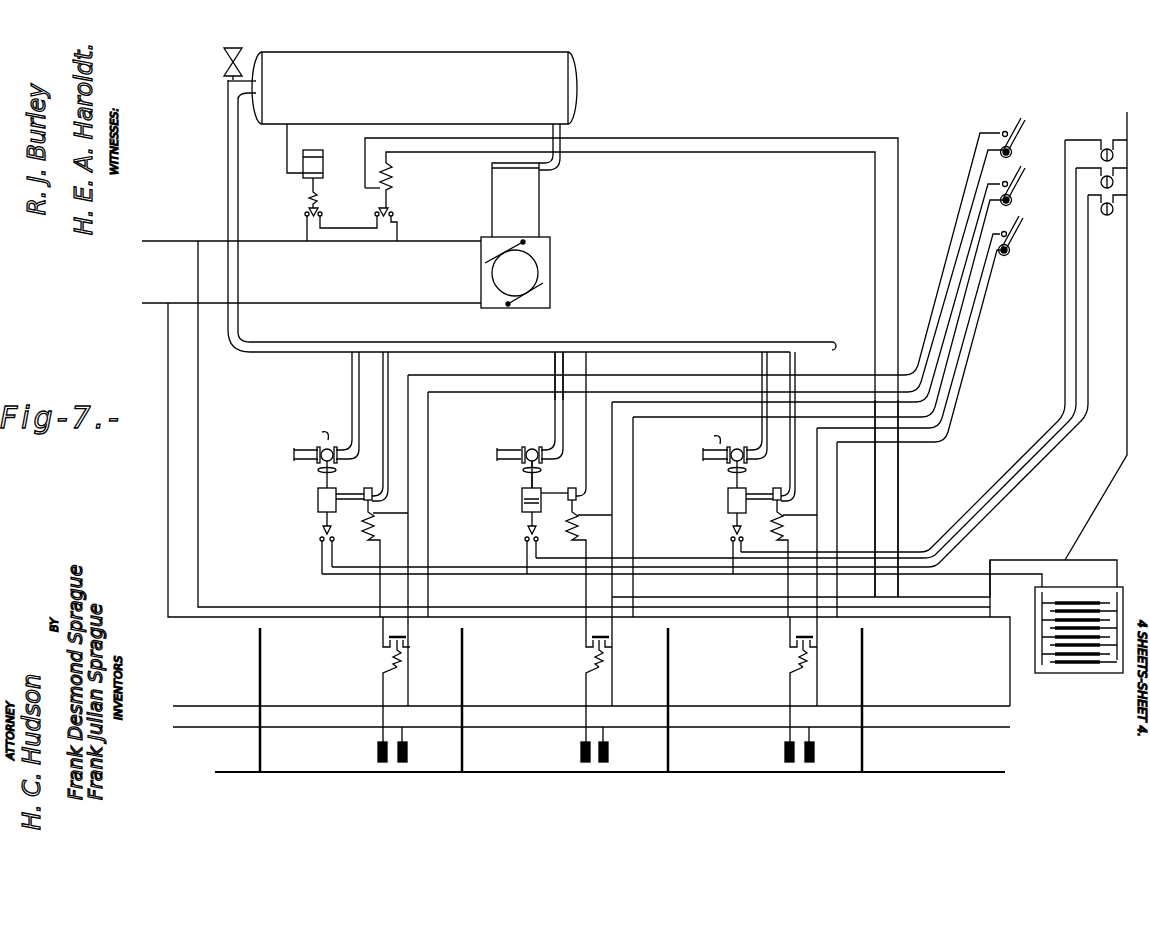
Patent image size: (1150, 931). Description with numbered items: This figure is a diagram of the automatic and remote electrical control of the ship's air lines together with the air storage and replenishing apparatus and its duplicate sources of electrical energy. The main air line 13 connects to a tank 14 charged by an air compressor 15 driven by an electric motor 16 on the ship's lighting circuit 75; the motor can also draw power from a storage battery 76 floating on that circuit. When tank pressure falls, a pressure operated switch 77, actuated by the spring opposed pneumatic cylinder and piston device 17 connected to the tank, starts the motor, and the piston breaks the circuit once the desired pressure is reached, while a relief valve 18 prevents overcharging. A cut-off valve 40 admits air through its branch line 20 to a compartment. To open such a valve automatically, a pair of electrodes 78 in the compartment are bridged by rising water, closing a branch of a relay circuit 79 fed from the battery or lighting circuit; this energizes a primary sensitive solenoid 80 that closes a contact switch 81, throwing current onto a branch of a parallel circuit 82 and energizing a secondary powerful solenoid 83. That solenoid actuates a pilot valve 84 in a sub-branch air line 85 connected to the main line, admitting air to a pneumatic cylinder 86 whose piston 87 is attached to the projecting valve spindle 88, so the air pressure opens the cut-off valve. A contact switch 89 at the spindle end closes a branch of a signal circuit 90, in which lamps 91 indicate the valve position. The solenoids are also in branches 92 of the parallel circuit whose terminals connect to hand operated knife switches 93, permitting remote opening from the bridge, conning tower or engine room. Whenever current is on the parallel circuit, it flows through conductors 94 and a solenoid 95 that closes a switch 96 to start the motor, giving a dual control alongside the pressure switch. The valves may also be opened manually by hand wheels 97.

The main air line 13 is at (228, 172).
The tank 14 is at (414, 88).
The air compressor 15 is at (526, 180).
The electric motor 16 is at (515, 272).
The pneumatic cylinder and piston device 17 is at (323, 160).
The relief valve 18 is at (222, 52).
The branch line 20 is at (552, 406).
The cut-off valve 40 is at (528, 447).
The ship's lighting circuit 75 is at (178, 243).
The storage battery 76 is at (1070, 674).
The pressure operated switch 77 is at (305, 214).
The electrodes 78 is at (614, 781).
The relay circuit 79 is at (560, 722).
The primary sensitive solenoid 80 is at (596, 667).
The contact switch 81 is at (589, 648).
The parallel circuit 82 is at (462, 606).
The secondary powerful solenoid 83 is at (580, 528).
The pilot valve 84 is at (572, 488).
The sub-branch air line 85 is at (586, 455).
The pneumatic cylinder 86 is at (520, 508).
The piston 87 is at (522, 497).
The valve spindle 88 is at (525, 479).
The contact switch 89 is at (526, 532).
The signal circuit 90 is at (1072, 310).
The lamps 91 is at (1100, 156).
The branches 92 is at (612, 494).
The knife switches 93 is at (1012, 200).
The conductors 94 is at (880, 508).
The solenoid 95 is at (393, 180).
The switch 96 is at (393, 214).
The hand wheels 97 is at (522, 470).